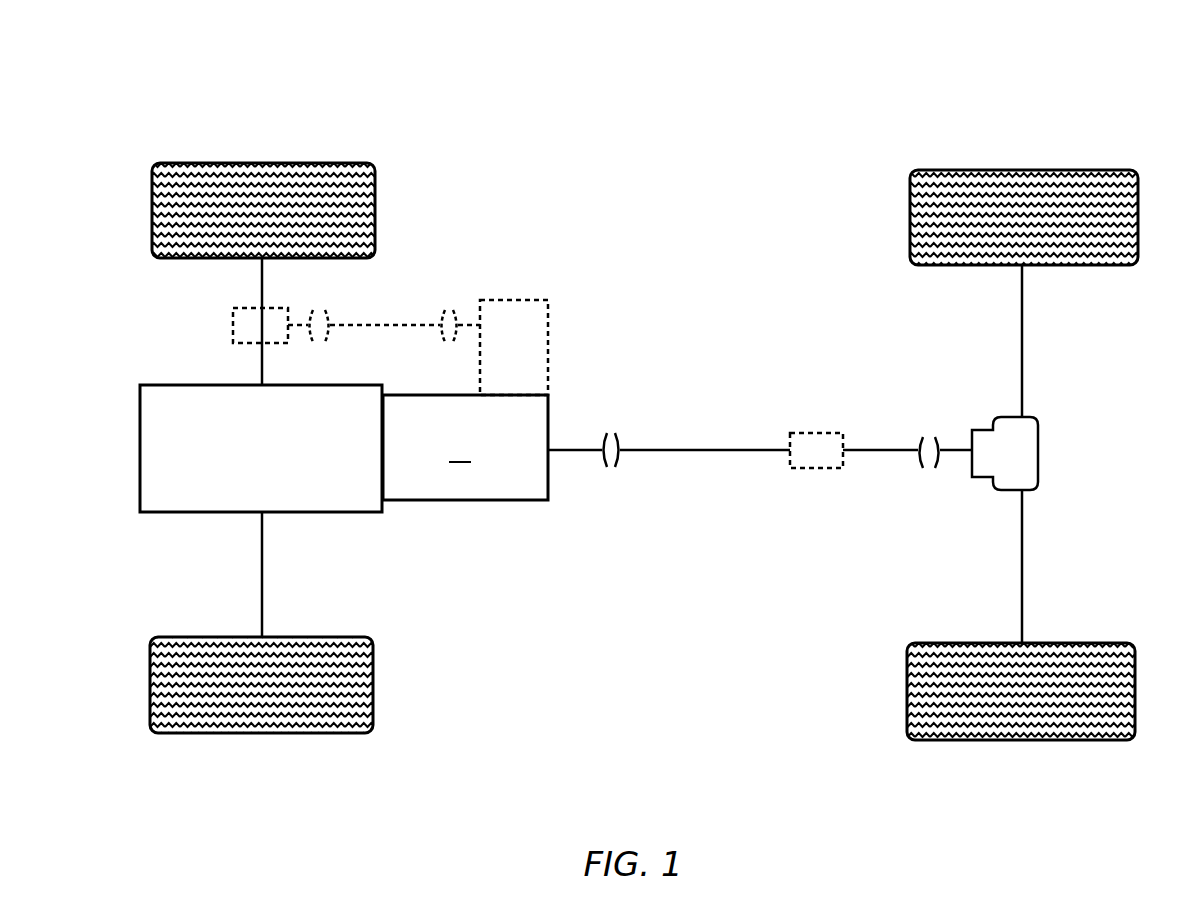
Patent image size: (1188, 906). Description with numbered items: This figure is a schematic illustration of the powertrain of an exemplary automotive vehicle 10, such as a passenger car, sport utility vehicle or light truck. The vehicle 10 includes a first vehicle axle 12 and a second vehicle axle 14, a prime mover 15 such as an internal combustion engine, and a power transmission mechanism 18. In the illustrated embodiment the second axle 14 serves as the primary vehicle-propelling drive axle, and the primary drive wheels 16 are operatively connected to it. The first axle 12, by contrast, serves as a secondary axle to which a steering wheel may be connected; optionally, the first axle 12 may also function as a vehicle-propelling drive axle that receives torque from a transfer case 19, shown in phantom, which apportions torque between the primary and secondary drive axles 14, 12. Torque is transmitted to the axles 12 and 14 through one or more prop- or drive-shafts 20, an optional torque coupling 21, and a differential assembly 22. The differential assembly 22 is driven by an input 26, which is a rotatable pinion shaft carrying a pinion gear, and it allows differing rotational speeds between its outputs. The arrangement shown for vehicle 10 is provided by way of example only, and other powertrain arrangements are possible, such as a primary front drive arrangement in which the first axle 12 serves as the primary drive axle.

The automotive vehicle 10 is at (657, 126).
The first vehicle axle 12 is at (262, 583).
The second vehicle axle 14 is at (1025, 343).
The prime mover 15 is at (270, 458).
The primary drive wheels 16 is at (1055, 171).
The power transmission mechanism 18 is at (282, 165).
The transfer case 19 is at (525, 359).
The drive shaft 20 is at (385, 322).
The torque coupling 21 is at (805, 462).
The differential assembly 22 is at (233, 328).
The input 26 is at (295, 322).